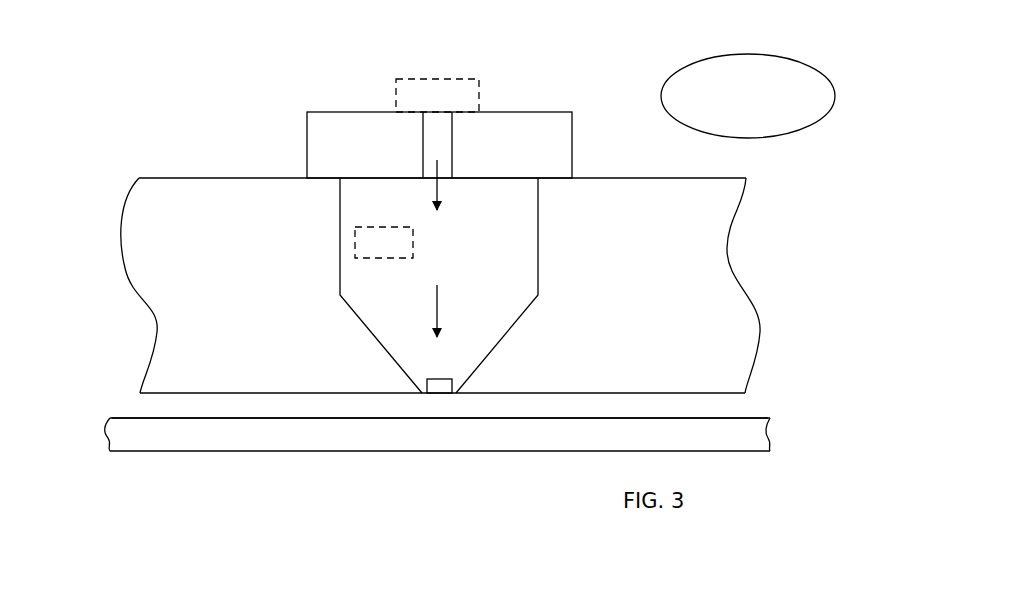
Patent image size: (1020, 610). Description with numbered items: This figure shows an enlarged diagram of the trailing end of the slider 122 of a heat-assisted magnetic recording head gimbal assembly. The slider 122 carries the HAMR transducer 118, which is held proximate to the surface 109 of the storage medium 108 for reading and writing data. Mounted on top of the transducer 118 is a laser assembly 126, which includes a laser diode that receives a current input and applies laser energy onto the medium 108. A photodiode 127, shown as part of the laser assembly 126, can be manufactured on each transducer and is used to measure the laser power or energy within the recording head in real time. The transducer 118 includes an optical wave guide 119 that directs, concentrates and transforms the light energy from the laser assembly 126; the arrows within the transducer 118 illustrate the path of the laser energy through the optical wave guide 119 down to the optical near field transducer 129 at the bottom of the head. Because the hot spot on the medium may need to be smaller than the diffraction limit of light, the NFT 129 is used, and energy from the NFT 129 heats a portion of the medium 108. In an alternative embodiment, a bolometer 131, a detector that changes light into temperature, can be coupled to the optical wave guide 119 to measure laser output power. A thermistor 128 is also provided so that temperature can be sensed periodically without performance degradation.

The slider 122 is at (138, 134).
The transducer 118 is at (583, 268).
The optical wave guide 119 is at (519, 321).
The laser assembly 126 is at (548, 96).
The photodiode 127 is at (456, 105).
The thermistor 128 is at (766, 106).
The optical near field transducer 129 is at (436, 379).
The bolometer 131 is at (404, 253).
The storage medium 108 is at (737, 433).
The surface 109 is at (132, 418).